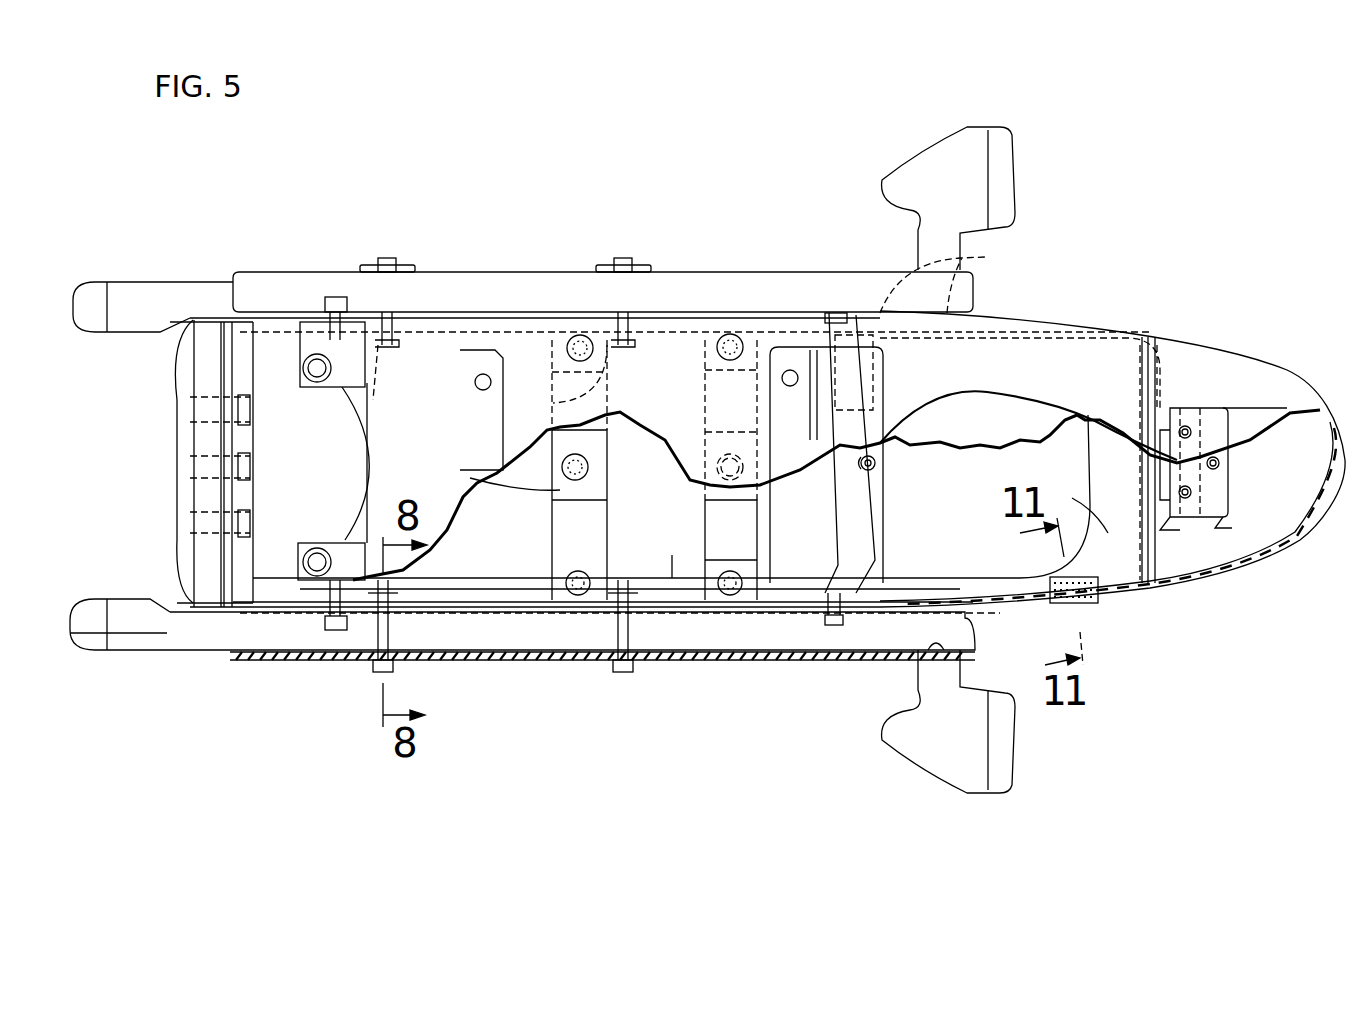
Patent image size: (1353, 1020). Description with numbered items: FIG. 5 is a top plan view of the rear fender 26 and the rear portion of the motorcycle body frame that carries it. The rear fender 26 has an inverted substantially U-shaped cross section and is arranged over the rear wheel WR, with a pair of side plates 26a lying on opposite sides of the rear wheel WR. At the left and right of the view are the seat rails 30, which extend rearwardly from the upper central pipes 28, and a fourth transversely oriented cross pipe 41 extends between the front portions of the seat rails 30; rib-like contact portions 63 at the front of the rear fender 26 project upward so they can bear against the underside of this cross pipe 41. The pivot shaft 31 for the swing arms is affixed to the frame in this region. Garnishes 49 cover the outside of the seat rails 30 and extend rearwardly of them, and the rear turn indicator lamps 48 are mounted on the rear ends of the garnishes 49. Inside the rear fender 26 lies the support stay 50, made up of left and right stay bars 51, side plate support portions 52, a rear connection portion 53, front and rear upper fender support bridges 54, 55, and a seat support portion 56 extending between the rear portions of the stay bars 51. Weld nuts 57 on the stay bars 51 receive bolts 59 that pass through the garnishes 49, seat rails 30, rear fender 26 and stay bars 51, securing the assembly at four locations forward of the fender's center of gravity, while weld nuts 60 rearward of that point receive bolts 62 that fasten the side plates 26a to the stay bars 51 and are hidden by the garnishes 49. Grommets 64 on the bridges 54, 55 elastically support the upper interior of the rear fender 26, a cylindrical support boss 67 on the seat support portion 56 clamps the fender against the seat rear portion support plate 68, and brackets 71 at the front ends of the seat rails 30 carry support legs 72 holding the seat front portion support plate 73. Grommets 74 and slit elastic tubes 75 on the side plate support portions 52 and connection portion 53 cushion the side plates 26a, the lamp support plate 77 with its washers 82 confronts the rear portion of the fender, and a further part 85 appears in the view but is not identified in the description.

The rear fender 26 is at (648, 395).
The side plate 26a is at (738, 330).
The upper central pipe 28 is at (93, 292).
The seat rail 30 is at (205, 292).
The pivot shaft 31 is at (523, 580).
The fourth transversely oriented cross pipe 41 is at (205, 355).
The rear turn indicator lamp 48 is at (962, 142).
The garnish 49 is at (565, 272).
The support stay 50 is at (1174, 572).
The stay bar 51 is at (456, 374).
The side plate support portion 52 is at (1008, 317).
The rear connection portion 53 is at (1255, 567).
The front upper fender support bridge 54 is at (470, 478).
The rear upper fender support bridge 55 is at (748, 520).
The seat support portion 56 is at (870, 505).
The weld nut 57 is at (354, 407).
The bolt 59 is at (390, 260).
The weld nut 60 is at (888, 363).
The bolt 62 is at (832, 313).
The contact portion 63 is at (190, 458).
The grommet 64 is at (590, 463).
The cylindrical support boss 67 is at (900, 426).
The seat rear portion support plate 68 is at (825, 430).
The bracket 71 is at (330, 296).
The support leg 72 is at (307, 330).
The seat front portion support plate 73 is at (484, 372).
The grommet 74 is at (949, 277).
The elastic tube 75 is at (1087, 317).
The lamp support plate 77 is at (1230, 507).
The washer 82 is at (1197, 490).
The tail cross bar 85 is at (1142, 500).
The rear wheel WR is at (1100, 530).